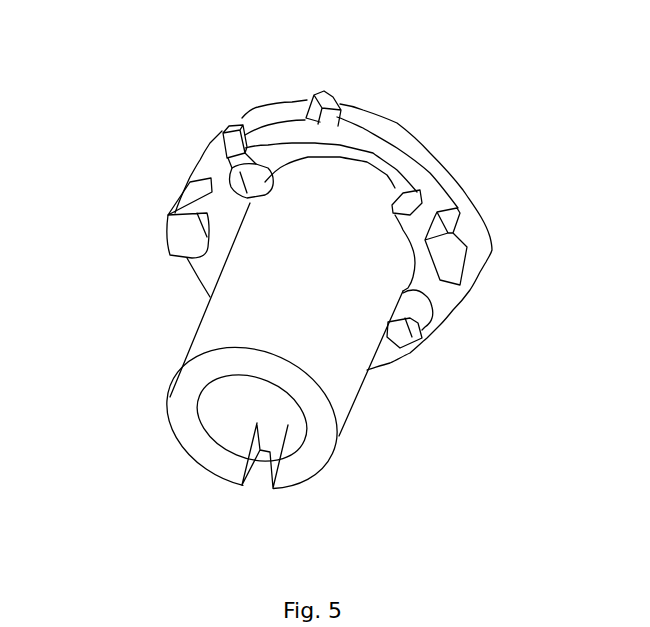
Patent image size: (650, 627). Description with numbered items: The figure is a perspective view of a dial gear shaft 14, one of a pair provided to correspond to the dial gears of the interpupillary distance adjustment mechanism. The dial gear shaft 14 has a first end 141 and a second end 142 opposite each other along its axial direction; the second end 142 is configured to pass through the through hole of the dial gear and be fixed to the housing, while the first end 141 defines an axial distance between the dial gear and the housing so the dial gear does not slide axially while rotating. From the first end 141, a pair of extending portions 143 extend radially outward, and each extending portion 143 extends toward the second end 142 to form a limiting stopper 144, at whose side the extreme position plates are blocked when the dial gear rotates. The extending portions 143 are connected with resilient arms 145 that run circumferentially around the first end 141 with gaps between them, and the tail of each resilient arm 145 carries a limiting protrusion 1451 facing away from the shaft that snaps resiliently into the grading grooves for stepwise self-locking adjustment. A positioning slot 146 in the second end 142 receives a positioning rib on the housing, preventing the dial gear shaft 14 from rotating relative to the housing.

The dial gear shaft 14 is at (376, 55).
The first end 141 is at (335, 173).
The second end 142 is at (225, 357).
The extending portions 143 is at (453, 300).
The limiting stopper 144 is at (193, 233).
The resilient arms 145 is at (238, 128).
The limiting protrusion 1451 is at (337, 107).
The positioning slot 146 is at (263, 460).